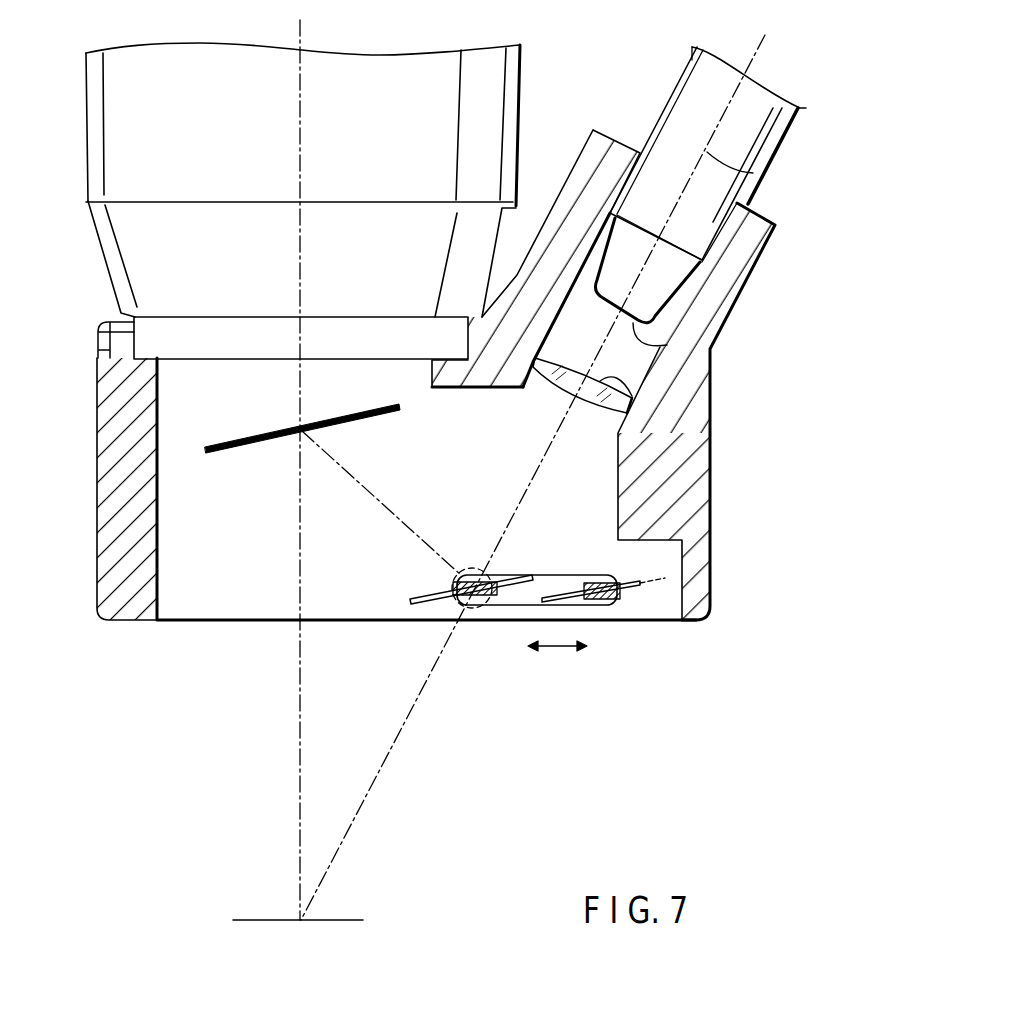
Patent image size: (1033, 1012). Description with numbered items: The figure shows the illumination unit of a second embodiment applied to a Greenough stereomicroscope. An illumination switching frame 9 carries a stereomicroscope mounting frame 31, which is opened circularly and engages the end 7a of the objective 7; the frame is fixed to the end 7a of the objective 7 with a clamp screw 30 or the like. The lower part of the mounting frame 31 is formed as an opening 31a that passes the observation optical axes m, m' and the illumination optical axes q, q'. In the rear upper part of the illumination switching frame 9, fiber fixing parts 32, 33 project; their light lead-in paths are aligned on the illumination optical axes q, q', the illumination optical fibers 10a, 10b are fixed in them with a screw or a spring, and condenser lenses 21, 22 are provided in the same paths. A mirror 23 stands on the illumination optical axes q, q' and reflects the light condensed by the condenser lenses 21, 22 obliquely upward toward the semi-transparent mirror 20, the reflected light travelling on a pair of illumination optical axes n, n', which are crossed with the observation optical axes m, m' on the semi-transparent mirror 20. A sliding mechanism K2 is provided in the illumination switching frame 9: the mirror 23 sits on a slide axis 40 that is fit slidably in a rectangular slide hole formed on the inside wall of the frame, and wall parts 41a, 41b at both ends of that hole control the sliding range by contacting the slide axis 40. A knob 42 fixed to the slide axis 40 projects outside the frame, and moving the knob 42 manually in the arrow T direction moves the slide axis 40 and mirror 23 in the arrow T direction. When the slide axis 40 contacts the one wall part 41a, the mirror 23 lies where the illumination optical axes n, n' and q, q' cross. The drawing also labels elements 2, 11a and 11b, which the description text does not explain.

The object surface / reading plane 2 is at (337, 918).
The objective 7 is at (88, 143).
The end of the objective 7a is at (172, 327).
The illumination switching frame 9 is at (105, 578).
The illumination optical fiber 10a is at (740, 153).
The illumination optical fiber 10b is at (786, 130).
The lens holder 11a is at (708, 300).
The lens holder 11b is at (640, 325).
The semi-transparent mirror 20 is at (228, 455).
The condenser lens 21 is at (675, 413).
The condenser lens 22 is at (640, 396).
The mirror 23 is at (415, 621).
The clamp screw 30 is at (103, 344).
The stereomicroscope mounting frame 31 is at (468, 347).
The opening 31a is at (160, 575).
The fiber fixing part 32 is at (716, 411).
The fiber fixing part 33 is at (723, 238).
The slide axis 40 is at (485, 574).
The wall part 41a is at (452, 588).
The wall part 41b is at (612, 608).
The knob 42 is at (463, 564).
The arrow T direction T is at (557, 662).
The sliding mechanism K2 is at (476, 630).
The observation optical axis m is at (251, 470).
The observation optical axis m' is at (251, 470).
The illumination optical axis n is at (382, 501).
The illumination optical axis n' is at (382, 501).
The illumination optical axis q is at (579, 477).
The illumination optical axis q' is at (579, 477).